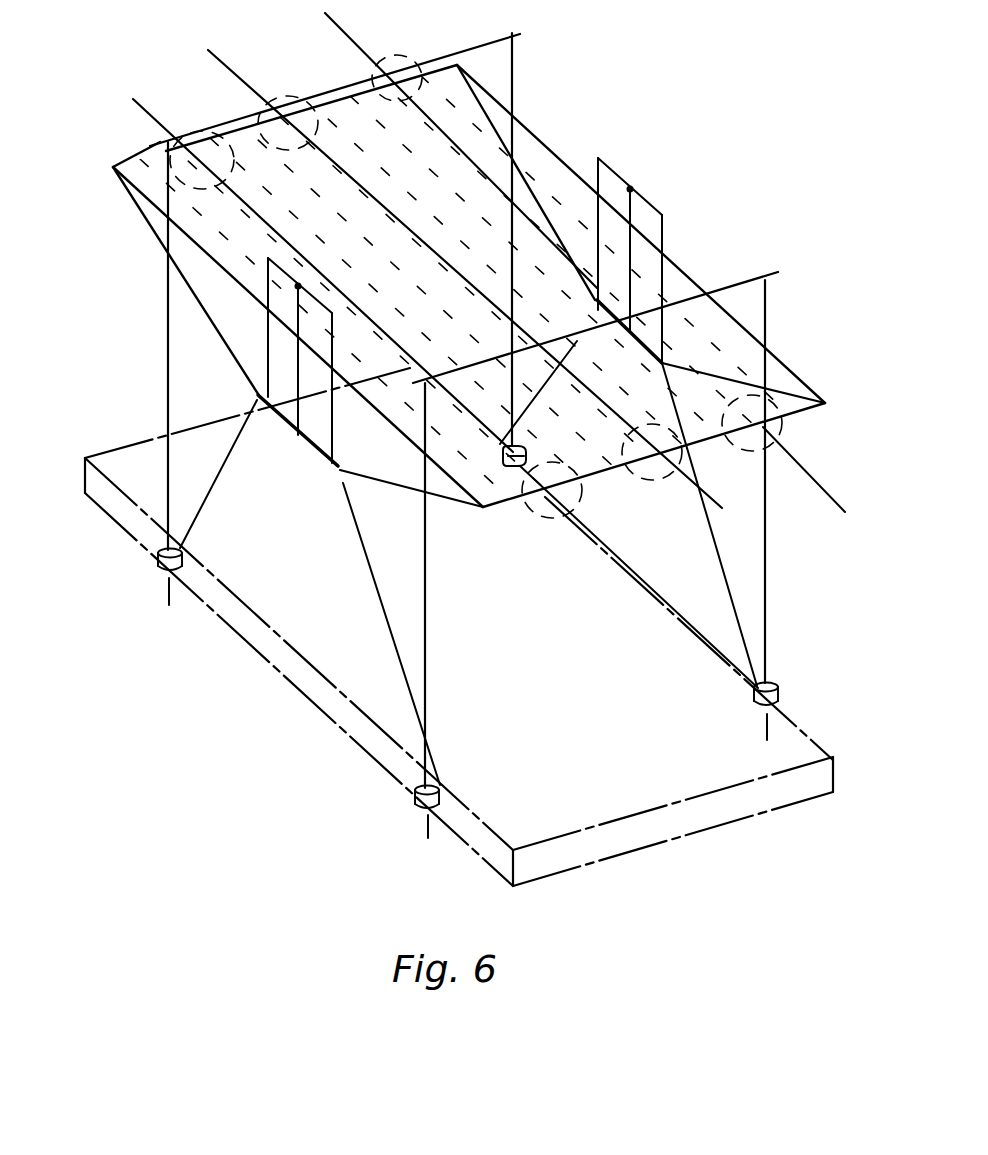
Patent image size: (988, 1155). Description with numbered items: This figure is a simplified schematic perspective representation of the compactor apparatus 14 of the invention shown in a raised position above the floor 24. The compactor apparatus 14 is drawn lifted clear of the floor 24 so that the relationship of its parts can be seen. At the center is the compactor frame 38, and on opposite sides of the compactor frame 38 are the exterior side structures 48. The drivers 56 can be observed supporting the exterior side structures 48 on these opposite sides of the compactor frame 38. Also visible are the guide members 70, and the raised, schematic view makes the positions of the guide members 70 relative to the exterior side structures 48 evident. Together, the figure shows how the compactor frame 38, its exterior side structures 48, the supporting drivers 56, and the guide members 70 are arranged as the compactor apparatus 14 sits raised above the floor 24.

The compactor apparatus 14 is at (800, 370).
The floor 24 is at (797, 750).
The compactor frame 38 is at (133, 163).
The exterior side structures 48 is at (800, 398).
The drivers 56 is at (632, 208).
The guide members 70 is at (512, 68).